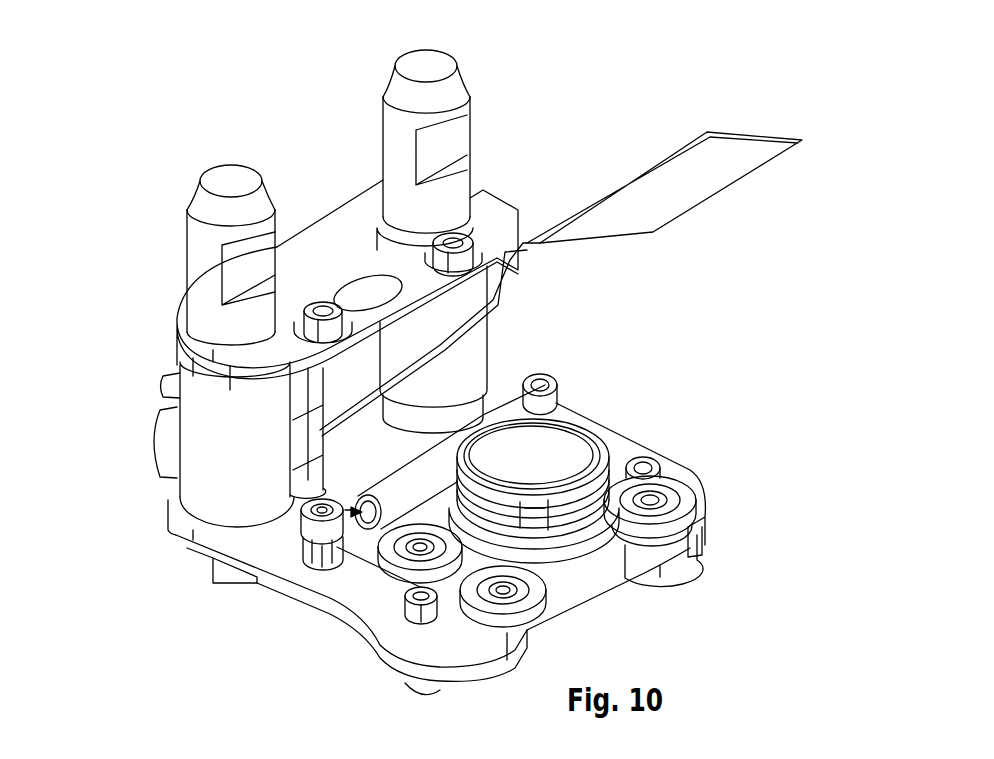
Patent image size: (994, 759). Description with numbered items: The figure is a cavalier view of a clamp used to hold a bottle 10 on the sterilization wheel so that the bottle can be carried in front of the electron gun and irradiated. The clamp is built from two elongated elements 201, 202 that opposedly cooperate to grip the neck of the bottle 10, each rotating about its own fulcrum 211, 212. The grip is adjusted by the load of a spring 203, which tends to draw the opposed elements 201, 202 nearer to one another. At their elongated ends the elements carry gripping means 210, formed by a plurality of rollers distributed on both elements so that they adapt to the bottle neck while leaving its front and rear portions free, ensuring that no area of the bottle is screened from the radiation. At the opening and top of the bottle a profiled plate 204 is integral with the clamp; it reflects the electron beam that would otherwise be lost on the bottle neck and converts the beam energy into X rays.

The bottle 10 is at (580, 543).
The elongated element 201 is at (247, 563).
The elongated element 202 is at (617, 422).
The spring 203 is at (483, 413).
The profiled plate 204 is at (722, 172).
The gripping means 210 is at (676, 487).
The fulcrum 211 is at (220, 176).
The fulcrum 212 is at (388, 80).